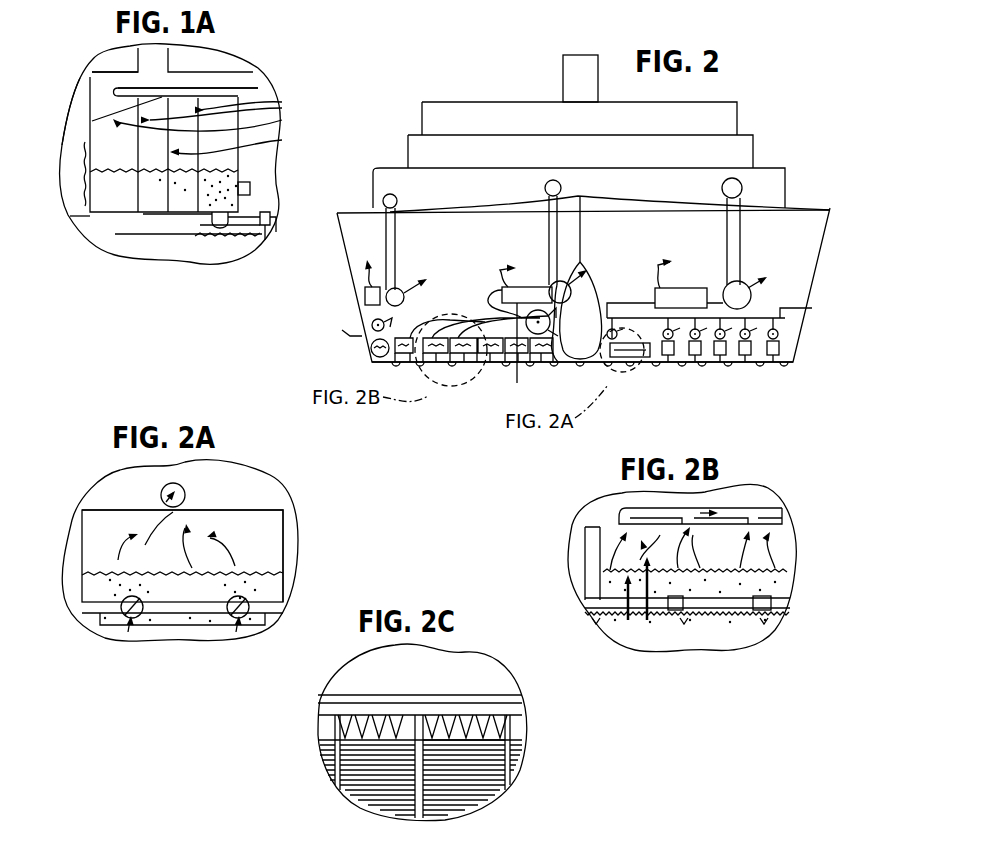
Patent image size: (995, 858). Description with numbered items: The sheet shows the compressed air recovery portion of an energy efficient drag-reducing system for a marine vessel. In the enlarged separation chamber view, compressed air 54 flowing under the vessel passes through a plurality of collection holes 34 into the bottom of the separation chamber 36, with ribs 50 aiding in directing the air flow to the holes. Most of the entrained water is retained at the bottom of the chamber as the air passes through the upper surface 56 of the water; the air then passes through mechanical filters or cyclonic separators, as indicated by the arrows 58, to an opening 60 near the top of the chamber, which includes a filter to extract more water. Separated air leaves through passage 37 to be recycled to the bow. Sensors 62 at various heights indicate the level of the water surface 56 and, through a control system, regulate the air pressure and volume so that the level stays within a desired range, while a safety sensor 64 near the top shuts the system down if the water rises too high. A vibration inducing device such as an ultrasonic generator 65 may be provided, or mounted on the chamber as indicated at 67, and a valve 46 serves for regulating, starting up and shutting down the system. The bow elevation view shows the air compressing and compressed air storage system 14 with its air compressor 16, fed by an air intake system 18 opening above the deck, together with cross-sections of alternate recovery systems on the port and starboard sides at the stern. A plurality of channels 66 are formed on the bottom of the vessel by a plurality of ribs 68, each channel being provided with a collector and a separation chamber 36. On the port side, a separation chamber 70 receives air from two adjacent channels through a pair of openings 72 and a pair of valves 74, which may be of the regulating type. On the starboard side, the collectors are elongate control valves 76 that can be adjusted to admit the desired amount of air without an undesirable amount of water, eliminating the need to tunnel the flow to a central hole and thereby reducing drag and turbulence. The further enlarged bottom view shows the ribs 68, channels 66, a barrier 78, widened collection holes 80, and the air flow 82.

In FIG. 2, the air compressing and compressed air storage system 14 is at (365, 292).
In FIG. 2, the air compressor 16 is at (370, 303).
In FIG. 2, the air intake system 18 is at (552, 248).
In FIG. 1A, the collection holes 34 is at (200, 245).
In FIG. 1A, the separation chamber 36 is at (140, 218).
In FIG. 2, the separation chamber 36 is at (795, 345).
In FIG. 2B, the separation chamber 36 is at (776, 540).
In FIG. 1A, the passage 37 is at (252, 80).
In FIG. 2A, the passage 37 is at (185, 490).
In FIG. 2B, the passage 37 is at (720, 506).
In FIG. 1A, the valve 46 is at (228, 222).
In FIG. 1A, the ribs 50 is at (262, 236).
In FIG. 1A, the compressed air 54 is at (274, 228).
In FIG. 1A, the upper surface of the water 56 is at (220, 172).
In FIG. 1A, the arrows 58 is at (211, 114).
In FIG. 1A, the opening 60 is at (106, 96).
In FIG. 1A, the sensors 62 is at (74, 205).
In FIG. 1A, the safety sensor 64 is at (85, 112).
In FIG. 1A, the ultrasonic generator 65 is at (264, 232).
In FIG. 2, the channels 66 is at (690, 362).
In FIG. 2C, the channels 66 is at (420, 805).
In FIG. 1A, the vibration inducing device location 67 is at (250, 186).
In FIG. 2, the ribs 68 is at (645, 365).
In FIG. 2C, the ribs 68 is at (470, 742).
In FIG. 2A, the separation chamber 70 is at (250, 510).
In FIG. 2A, the openings 72 is at (135, 625).
In FIG. 2A, the valves 74 is at (128, 630).
In FIG. 2B, the elongate control valves 76 is at (718, 600).
In FIG. 2C, the barrier 78 is at (525, 700).
In FIG. 2C, the widened collection holes 80 is at (530, 730).
In FIG. 2C, the air flow 82 is at (372, 770).